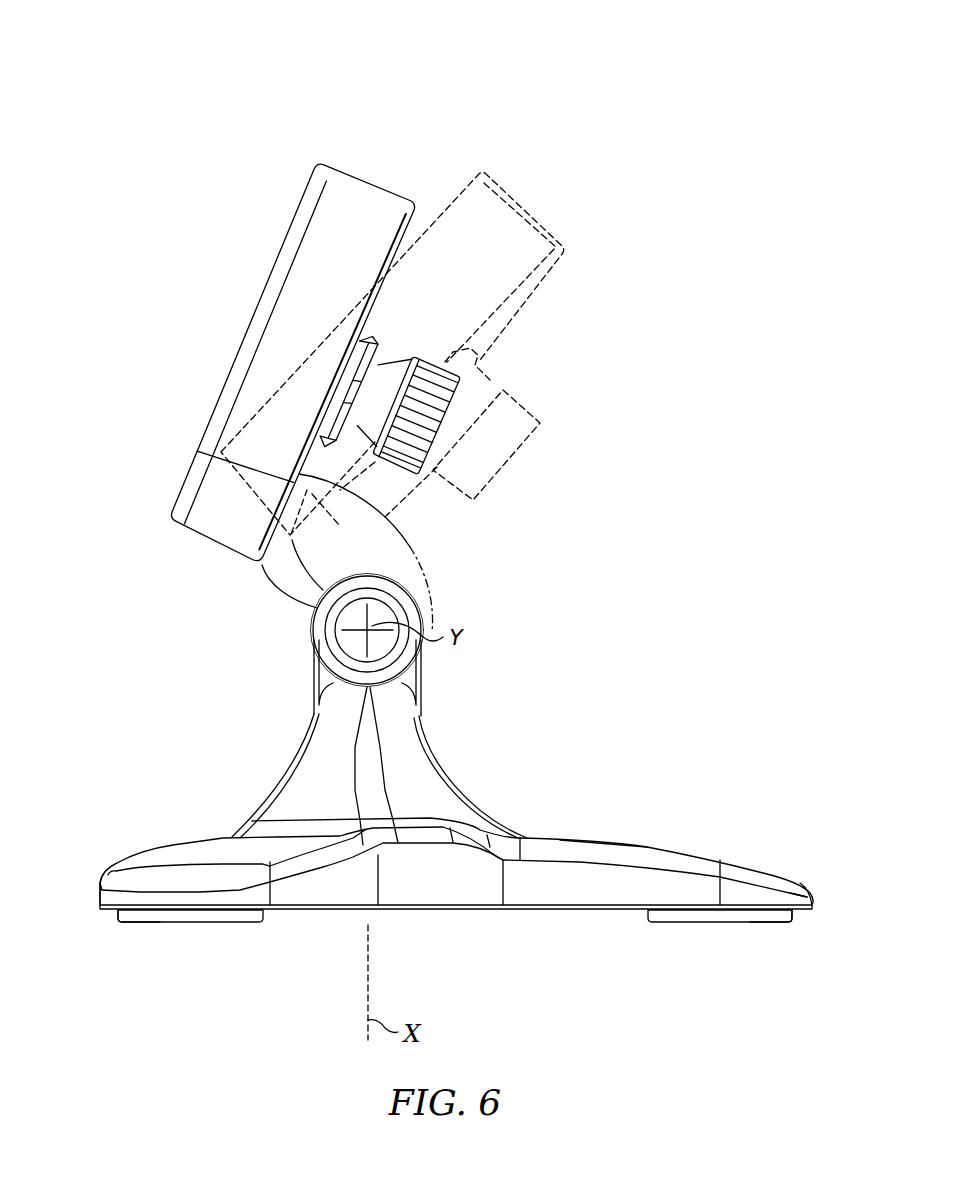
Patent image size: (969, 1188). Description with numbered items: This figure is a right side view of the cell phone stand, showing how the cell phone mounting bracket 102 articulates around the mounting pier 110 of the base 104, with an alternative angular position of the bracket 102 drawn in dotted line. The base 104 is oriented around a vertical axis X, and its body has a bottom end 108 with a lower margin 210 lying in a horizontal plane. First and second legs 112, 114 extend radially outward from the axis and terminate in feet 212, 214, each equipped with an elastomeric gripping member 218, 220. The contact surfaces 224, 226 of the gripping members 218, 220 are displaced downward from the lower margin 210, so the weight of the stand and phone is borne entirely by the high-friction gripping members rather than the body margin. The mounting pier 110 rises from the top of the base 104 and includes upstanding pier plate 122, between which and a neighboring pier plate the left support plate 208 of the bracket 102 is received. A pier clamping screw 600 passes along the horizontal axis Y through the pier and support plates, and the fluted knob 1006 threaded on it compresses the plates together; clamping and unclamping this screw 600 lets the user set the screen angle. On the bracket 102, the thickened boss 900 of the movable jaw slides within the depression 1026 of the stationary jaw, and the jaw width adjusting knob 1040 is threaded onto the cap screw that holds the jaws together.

The cell phone mounting bracket 102 is at (376, 152).
The thickened boss 900 is at (333, 398).
The depression 1026 is at (355, 340).
The jaw width adjusting knob 1040 is at (438, 357).
The left support plate 208 is at (375, 556).
The fluted knob 1006 is at (407, 600).
The pier clamping screw 600 is at (311, 630).
The mounting pier 110 is at (292, 676).
The pier plate 122 is at (412, 680).
The base 104 is at (612, 822).
The first leg 112 is at (173, 858).
The second leg 114 is at (690, 852).
The foot 212 is at (110, 876).
The foot 214 is at (797, 876).
The bottom end 108 is at (470, 896).
The lower margin 210 is at (333, 912).
The gripping member 218 is at (205, 918).
The contact surface 224 is at (165, 922).
The gripping member 220 is at (698, 915).
The contact surface 226 is at (757, 918).